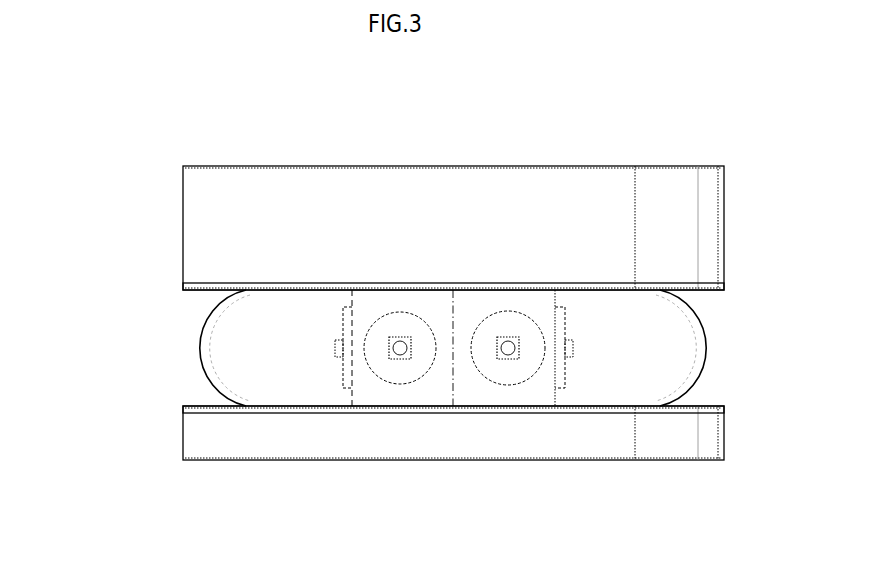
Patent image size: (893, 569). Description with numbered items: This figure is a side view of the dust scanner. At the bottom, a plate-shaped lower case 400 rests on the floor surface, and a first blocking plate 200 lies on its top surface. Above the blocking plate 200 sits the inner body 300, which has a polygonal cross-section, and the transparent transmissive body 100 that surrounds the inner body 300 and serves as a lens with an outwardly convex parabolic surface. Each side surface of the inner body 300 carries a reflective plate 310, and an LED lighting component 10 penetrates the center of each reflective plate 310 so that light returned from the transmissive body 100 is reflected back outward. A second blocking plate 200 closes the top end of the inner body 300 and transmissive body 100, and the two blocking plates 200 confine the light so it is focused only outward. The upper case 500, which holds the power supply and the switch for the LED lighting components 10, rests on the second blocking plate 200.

The upper case 500 is at (315, 182).
The lower case 400 is at (303, 453).
The blocking plate 200 is at (185, 285).
The transmissive body 100 is at (205, 342).
The inner body 300 is at (432, 372).
The reflective plate 310 is at (492, 368).
The LED lighting component 10 is at (522, 358).